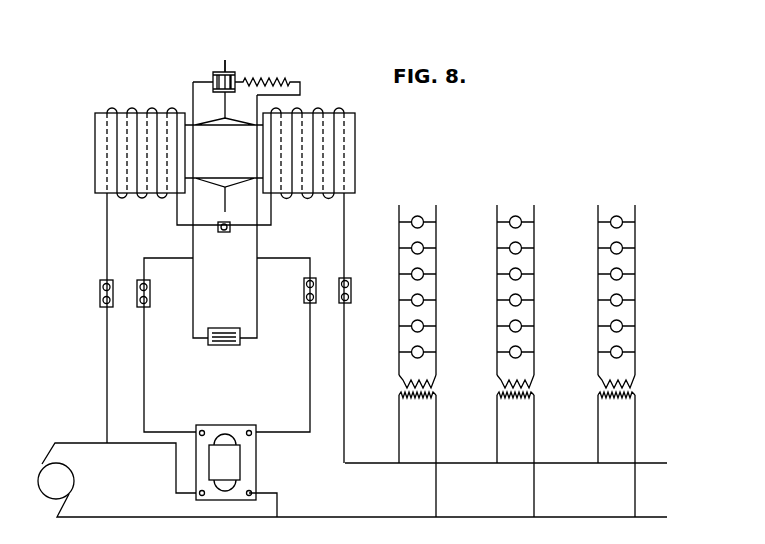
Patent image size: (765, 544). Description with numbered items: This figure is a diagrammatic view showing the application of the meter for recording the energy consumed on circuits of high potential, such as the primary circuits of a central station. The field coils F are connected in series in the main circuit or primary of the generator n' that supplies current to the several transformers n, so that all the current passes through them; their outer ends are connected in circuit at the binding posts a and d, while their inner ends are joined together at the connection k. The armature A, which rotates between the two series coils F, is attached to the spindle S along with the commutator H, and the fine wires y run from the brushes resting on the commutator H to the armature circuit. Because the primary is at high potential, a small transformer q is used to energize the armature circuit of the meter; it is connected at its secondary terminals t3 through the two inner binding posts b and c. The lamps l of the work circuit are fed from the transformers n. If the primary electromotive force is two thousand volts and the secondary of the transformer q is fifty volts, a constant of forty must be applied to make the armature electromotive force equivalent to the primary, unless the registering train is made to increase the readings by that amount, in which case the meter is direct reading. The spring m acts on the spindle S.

The armature A is at (224, 152).
The commutator H is at (213, 80).
The spindle S is at (227, 65).
The spring m is at (267, 78).
The series coils F is at (365, 153).
The series coils connection k is at (218, 232).
The fine wires y is at (224, 348).
The binding post a is at (100, 292).
The binding post b is at (150, 292).
The binding post c is at (304, 290).
The binding post d is at (351, 290).
The generator / dynamo n' is at (56, 481).
The small transformer q is at (247, 470).
The secondary terminals t3 is at (227, 449).
The lamps l is at (522, 290).
The transformers n is at (525, 446).